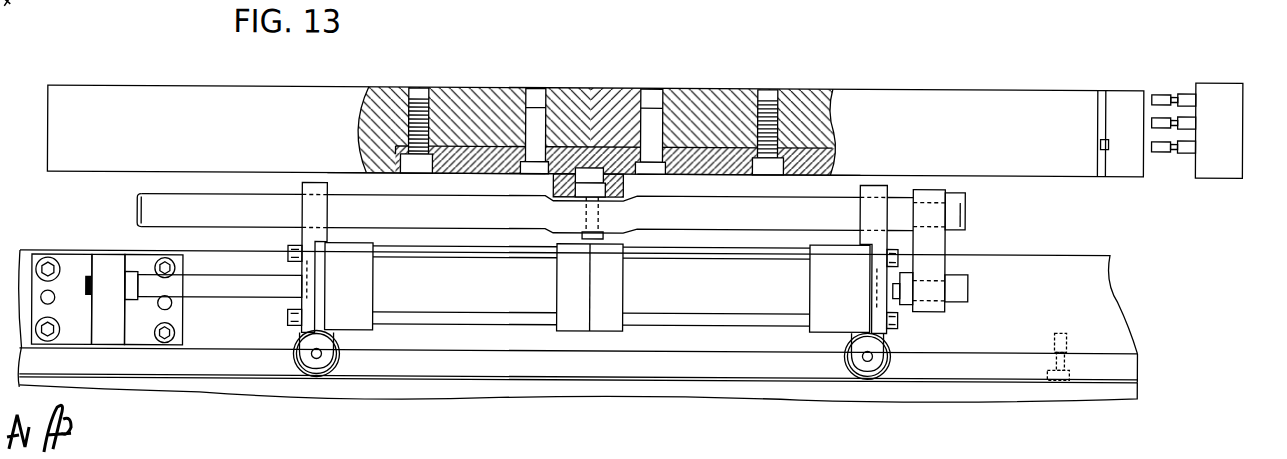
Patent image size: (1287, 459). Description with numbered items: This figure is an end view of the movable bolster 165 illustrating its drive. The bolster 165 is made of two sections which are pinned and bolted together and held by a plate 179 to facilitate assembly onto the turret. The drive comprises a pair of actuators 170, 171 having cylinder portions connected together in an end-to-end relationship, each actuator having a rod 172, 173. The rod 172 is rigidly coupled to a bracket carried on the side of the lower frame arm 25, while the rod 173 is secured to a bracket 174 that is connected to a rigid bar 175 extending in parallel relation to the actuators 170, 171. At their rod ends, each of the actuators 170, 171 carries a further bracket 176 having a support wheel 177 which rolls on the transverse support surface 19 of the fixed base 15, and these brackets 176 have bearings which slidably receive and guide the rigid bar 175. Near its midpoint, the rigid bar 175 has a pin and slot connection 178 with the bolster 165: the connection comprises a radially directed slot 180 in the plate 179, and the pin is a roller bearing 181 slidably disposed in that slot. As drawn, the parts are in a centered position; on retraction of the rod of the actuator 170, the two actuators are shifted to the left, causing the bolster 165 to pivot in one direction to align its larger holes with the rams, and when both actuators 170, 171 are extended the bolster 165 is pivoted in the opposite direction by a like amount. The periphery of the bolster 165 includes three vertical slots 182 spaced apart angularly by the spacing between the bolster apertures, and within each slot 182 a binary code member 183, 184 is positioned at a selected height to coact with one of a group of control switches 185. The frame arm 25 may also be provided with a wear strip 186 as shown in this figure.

The movable bolster 165 is at (292, 105).
The radially directed slot 180 is at (600, 172).
The roller bearing 181 is at (586, 192).
The pin and slot connection 178 is at (632, 180).
The plate 179 is at (736, 180).
The rigid bar 175 is at (802, 225).
The vertical slots 182 is at (1097, 109).
The binary code member 183 is at (1107, 146).
The binary code member 184 is at (1150, 88).
The control switches 185 is at (1212, 156).
The further bracket 176 is at (302, 332).
The support wheel 177 is at (342, 357).
The actuator 170 is at (485, 296).
The actuator 171 is at (696, 296).
The rod 172 is at (230, 287).
The bracket 174 is at (937, 247).
The rod 173 is at (968, 289).
The lower arm 25 is at (1105, 288).
The wear strip 186 is at (1125, 364).
The base 15 is at (1040, 388).
The support surface 19 is at (1103, 384).